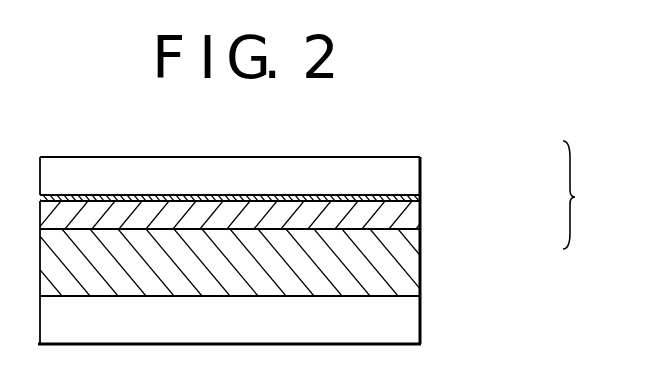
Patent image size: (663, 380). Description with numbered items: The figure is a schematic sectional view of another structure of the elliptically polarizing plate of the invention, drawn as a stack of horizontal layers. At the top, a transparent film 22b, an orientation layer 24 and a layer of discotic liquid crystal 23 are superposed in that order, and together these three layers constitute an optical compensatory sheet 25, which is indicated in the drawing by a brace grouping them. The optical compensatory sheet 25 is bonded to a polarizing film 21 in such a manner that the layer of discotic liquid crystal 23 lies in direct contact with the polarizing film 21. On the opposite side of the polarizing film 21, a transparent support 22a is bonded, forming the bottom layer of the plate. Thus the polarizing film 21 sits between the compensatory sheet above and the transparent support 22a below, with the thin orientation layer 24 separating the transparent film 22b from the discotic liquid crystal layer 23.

The polarizing film 21 is at (398, 265).
The transparent support 22a is at (407, 322).
The transparent film 22b is at (400, 177).
The layer of discotic liquid crystal 23 is at (410, 218).
The orientation layer 24 is at (400, 202).
The optical compensatory sheet 25 is at (604, 195).